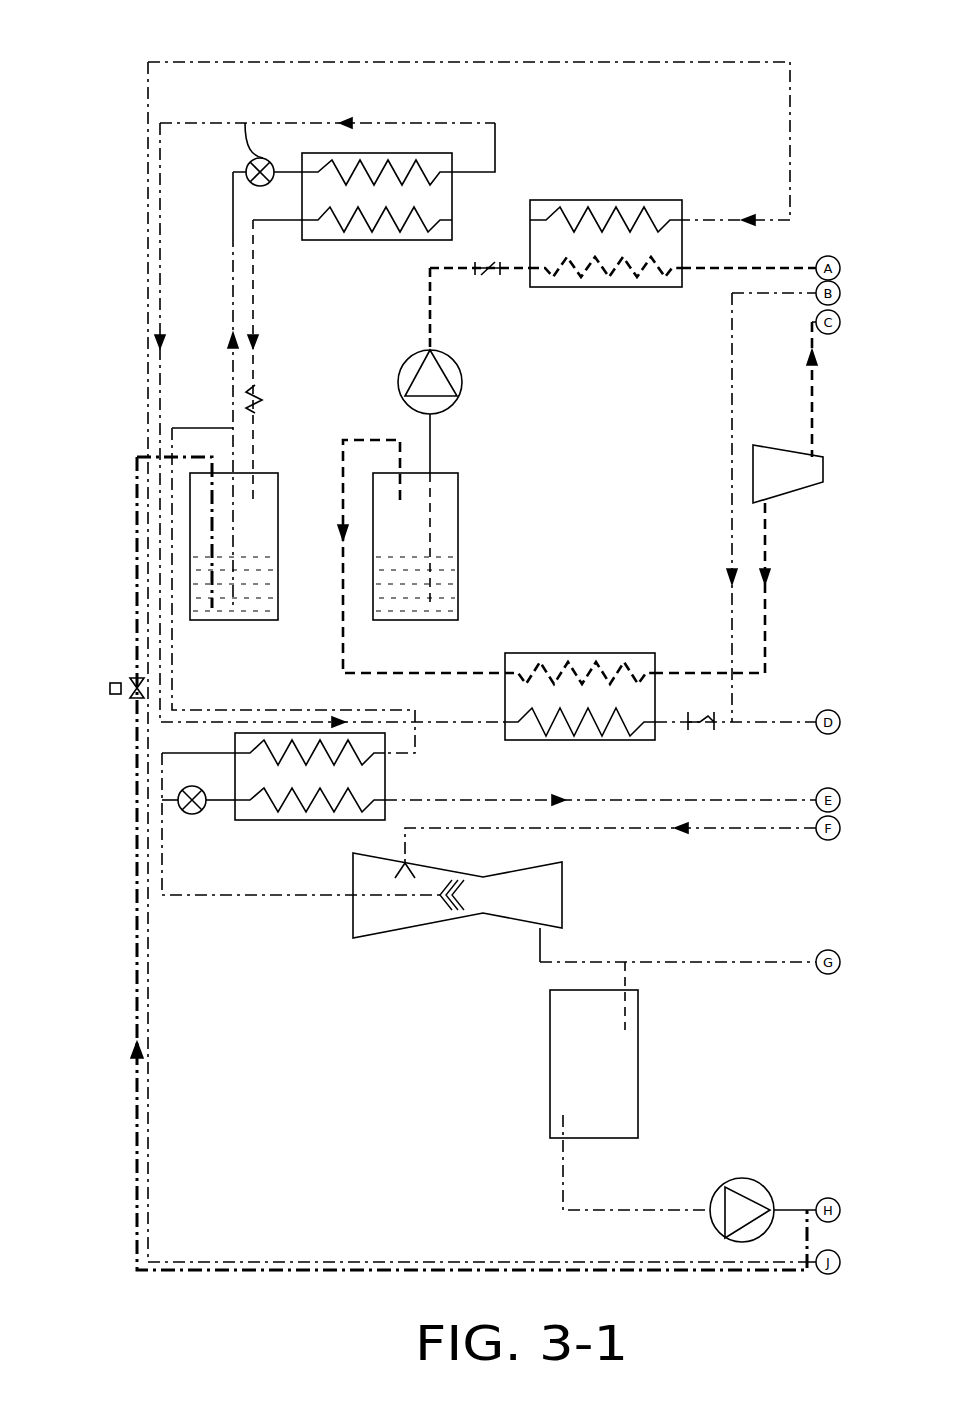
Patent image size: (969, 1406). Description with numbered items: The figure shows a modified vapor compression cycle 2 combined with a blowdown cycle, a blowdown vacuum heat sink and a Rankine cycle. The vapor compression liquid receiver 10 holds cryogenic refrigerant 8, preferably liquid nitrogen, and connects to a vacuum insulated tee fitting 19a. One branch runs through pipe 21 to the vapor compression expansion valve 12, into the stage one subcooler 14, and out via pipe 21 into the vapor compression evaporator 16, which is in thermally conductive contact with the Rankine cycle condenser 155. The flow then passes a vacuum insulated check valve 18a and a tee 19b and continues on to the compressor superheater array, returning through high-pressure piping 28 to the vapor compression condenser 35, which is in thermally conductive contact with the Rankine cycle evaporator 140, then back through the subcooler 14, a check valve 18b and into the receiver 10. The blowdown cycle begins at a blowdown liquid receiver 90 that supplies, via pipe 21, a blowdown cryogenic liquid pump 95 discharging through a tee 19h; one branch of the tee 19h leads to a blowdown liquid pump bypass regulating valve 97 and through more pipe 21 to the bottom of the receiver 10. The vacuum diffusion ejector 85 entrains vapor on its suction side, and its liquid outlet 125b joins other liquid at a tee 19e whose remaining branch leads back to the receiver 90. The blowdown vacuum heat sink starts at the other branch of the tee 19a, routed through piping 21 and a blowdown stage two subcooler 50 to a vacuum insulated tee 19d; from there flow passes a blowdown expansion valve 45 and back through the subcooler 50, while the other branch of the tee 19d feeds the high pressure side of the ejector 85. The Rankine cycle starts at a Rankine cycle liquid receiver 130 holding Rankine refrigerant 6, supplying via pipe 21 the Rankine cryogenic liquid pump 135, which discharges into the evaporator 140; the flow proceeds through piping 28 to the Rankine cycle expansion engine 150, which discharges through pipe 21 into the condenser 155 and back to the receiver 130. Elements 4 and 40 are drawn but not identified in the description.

The vapor compression cycle 2 is at (470, 62).
The pump 4 is at (433, 307).
The Rankine cycle refrigerant 6 is at (412, 620).
The vapor compression cryogenic refrigerant 8 is at (232, 620).
The vapor compression liquid receiver 10 is at (278, 471).
The vapor compression expansion valve 12 is at (244, 127).
The vapor compression stage 1 subcooler 14 is at (452, 220).
The vapor compression evaporator 16 is at (657, 742).
The vacuum insulated check valve 18a is at (700, 730).
The check valve 18b is at (258, 385).
The vacuum insulated tee fitting 19a is at (233, 428).
The tee 19b is at (732, 724).
The vacuum insulated tee 19d is at (157, 813).
The tee 19e is at (625, 962).
The tee 19h is at (806, 1199).
The pipe 21 is at (232, 258).
The high-pressure piping and appurtenances 28 is at (770, 268).
The vapor compression condenser 35 is at (621, 200).
The line 40 is at (300, 216).
The blowdown expansion valve 45 is at (206, 808).
The blowdown stage 2 subcooler 50 is at (305, 820).
The vacuum diffusion ejector 85 is at (497, 917).
The blowdown liquid receiver 90 is at (638, 1062).
The blowdown cryogenic liquid pump 95 is at (742, 1180).
The blowdown liquid pump bypass regulating valve 97 is at (111, 683).
The vacuum diffusion ejector liquid outlet 125b is at (543, 926).
The Rankine cycle liquid receiver 130 is at (458, 505).
The Rankine cycle cryogenic liquid pump 135 is at (455, 400).
The Rankine cycle evaporator 140 is at (690, 268).
The Rankine cycle expansion engine 150 is at (752, 456).
The Rankine cycle condenser 155 is at (511, 675).